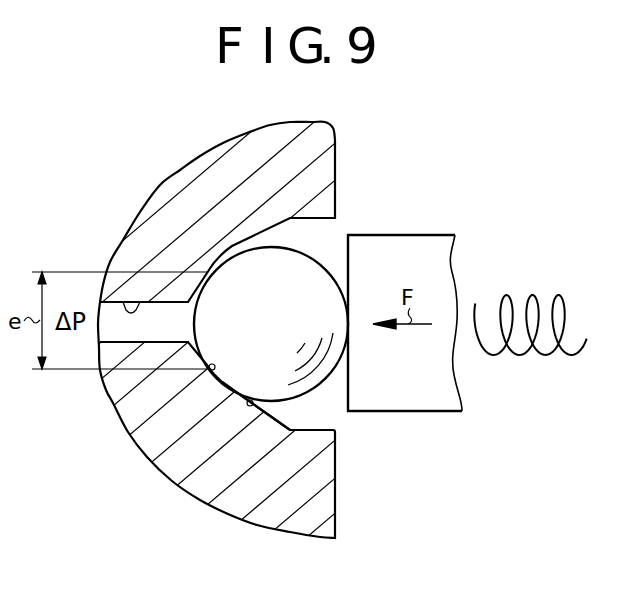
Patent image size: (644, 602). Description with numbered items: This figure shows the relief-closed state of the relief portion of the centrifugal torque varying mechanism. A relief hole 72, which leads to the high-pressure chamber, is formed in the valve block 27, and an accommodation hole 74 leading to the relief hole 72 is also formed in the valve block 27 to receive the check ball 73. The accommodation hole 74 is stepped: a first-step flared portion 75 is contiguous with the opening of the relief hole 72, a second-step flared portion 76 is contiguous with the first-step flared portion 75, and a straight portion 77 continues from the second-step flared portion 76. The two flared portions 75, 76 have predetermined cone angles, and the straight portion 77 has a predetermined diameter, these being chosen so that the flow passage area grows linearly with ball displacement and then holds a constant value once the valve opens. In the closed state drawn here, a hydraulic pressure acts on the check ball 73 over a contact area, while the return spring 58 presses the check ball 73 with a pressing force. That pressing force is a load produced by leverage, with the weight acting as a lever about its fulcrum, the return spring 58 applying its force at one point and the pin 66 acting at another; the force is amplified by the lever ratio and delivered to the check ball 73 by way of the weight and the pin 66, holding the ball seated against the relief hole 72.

The valve block 27 is at (307, 520).
The return spring 58 is at (568, 357).
The pin 66 is at (442, 272).
The relief hole 72 is at (123, 303).
The check ball 73 is at (302, 278).
The accommodation hole 74 is at (290, 412).
The first-step flared portion 75 is at (210, 370).
The second-step flared portion 76 is at (248, 406).
The straight portion 77 is at (320, 428).